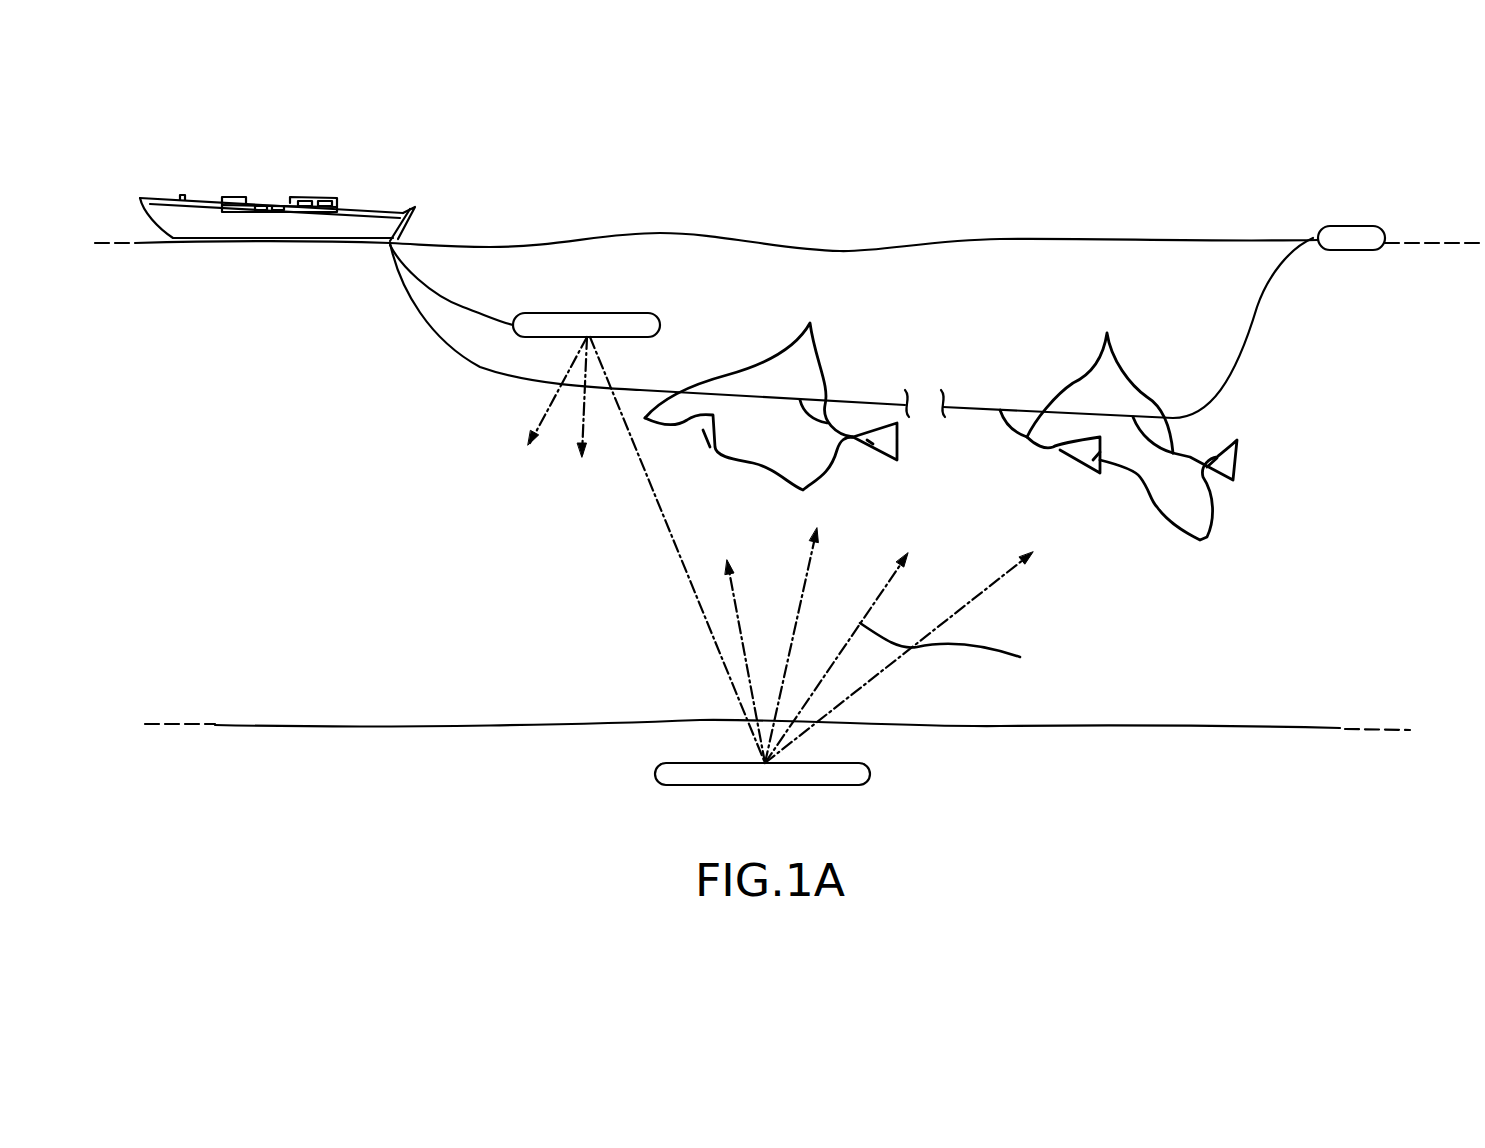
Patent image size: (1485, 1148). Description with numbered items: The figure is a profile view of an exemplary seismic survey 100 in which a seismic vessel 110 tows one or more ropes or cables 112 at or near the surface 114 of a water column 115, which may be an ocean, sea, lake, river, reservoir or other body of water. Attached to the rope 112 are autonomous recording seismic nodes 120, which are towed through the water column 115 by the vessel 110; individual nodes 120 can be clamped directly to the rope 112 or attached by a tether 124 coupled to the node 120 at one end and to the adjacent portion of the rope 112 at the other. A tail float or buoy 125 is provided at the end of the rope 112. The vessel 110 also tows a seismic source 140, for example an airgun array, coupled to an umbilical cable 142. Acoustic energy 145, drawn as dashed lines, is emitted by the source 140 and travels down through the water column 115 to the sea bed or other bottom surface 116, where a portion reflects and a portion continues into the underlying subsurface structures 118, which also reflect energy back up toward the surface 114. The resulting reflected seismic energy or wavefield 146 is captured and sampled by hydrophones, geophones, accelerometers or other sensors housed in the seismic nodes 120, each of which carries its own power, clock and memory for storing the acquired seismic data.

The seismic survey 100 is at (1213, 180).
The seismic vessel 110 is at (352, 210).
The rope or cable 112 is at (443, 349).
The surface of water column 114 is at (843, 247).
The water column 115 is at (381, 534).
The bottom surface 116 is at (1233, 726).
The subsurface structures 118 is at (680, 763).
The seismic node 120 is at (803, 490).
The tether 124 is at (810, 324).
The tail float or buoy 125 is at (1358, 226).
The seismic source 140 is at (620, 316).
The umbilical cable 142 is at (463, 303).
The acoustic energy 145 is at (667, 543).
The reflected seismic energy or wavefield 146 is at (950, 613).